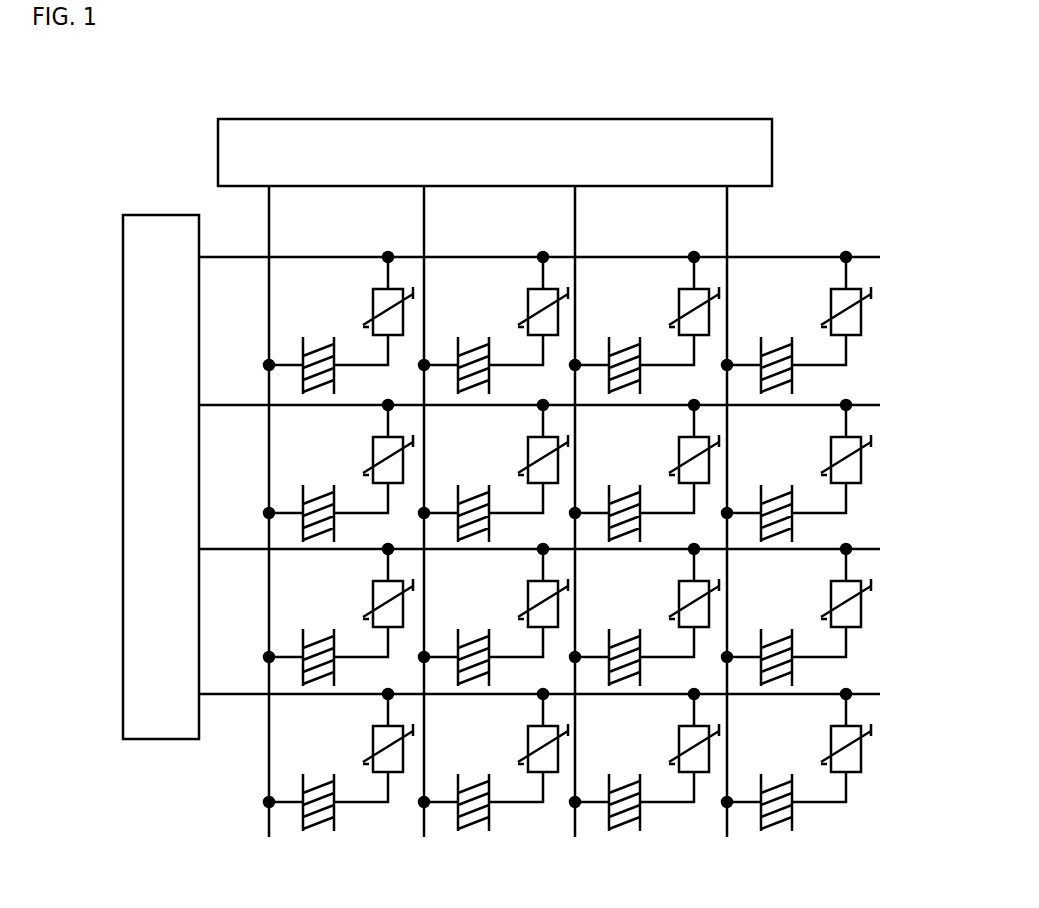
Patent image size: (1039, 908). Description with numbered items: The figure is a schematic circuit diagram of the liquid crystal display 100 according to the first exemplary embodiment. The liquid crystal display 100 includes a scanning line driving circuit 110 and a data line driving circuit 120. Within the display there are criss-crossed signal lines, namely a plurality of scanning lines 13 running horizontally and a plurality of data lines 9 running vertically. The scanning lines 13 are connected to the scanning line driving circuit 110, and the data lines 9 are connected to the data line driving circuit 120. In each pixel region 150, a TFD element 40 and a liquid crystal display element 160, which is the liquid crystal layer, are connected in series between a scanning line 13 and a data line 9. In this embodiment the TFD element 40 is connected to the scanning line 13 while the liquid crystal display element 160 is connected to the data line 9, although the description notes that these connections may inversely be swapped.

The liquid crystal display 100 is at (852, 203).
The scanning line driving circuit 110 is at (157, 220).
The data line driving circuit 120 is at (532, 124).
The data line 9 is at (270, 206).
The scanning line 13 is at (222, 549).
The pixel region 150 is at (298, 741).
The TFD element 40 is at (390, 787).
The liquid crystal display element 160 is at (324, 839).